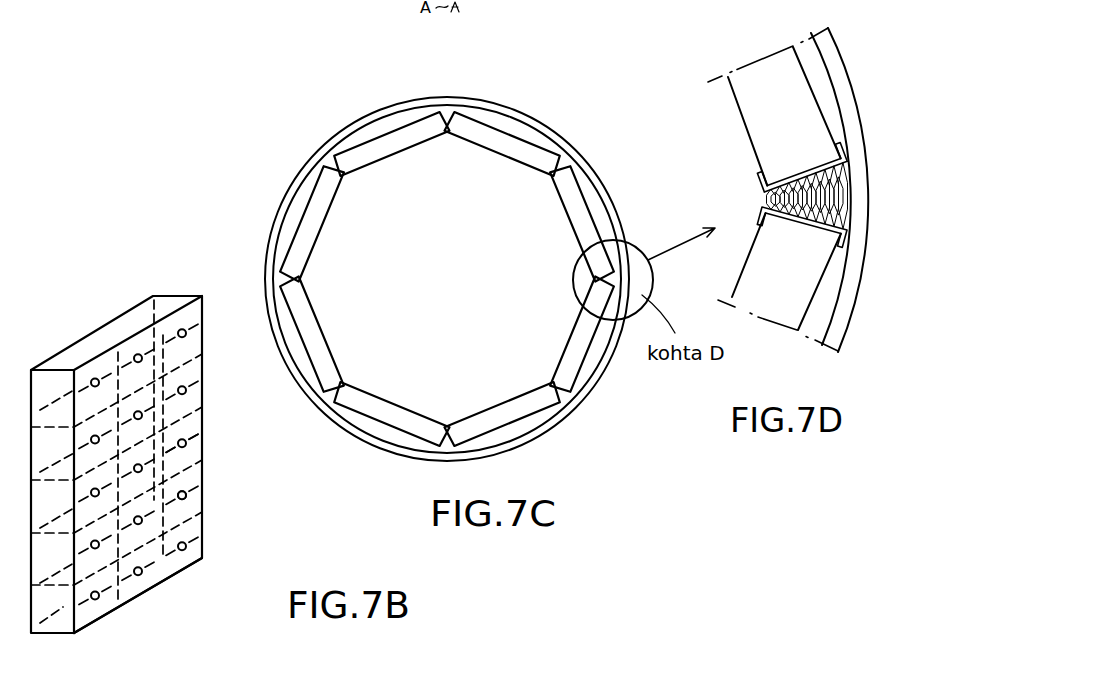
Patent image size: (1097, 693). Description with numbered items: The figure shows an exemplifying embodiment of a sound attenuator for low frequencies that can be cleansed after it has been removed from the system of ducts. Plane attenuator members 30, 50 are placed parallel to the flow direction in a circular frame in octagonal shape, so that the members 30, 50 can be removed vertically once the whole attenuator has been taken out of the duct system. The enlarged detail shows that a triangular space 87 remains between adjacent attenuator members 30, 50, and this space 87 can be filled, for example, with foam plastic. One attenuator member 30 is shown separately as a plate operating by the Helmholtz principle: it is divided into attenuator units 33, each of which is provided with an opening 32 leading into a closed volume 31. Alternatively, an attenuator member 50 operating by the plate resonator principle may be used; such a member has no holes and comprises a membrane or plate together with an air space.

In FIG. 7B, the attenuator member 30 is at (202, 547).
In FIG. 7C, the attenuator member 30 is at (370, 122).
In FIG. 7B, the closed volume 31 is at (172, 560).
In FIG. 7B, the opening 32 is at (187, 493).
In FIG. 7B, the attenuator unit 33 is at (192, 482).
In FIG. 7C, the attenuator member 50 is at (387, 148).
In FIG. 7D, the triangular space 87 is at (757, 207).